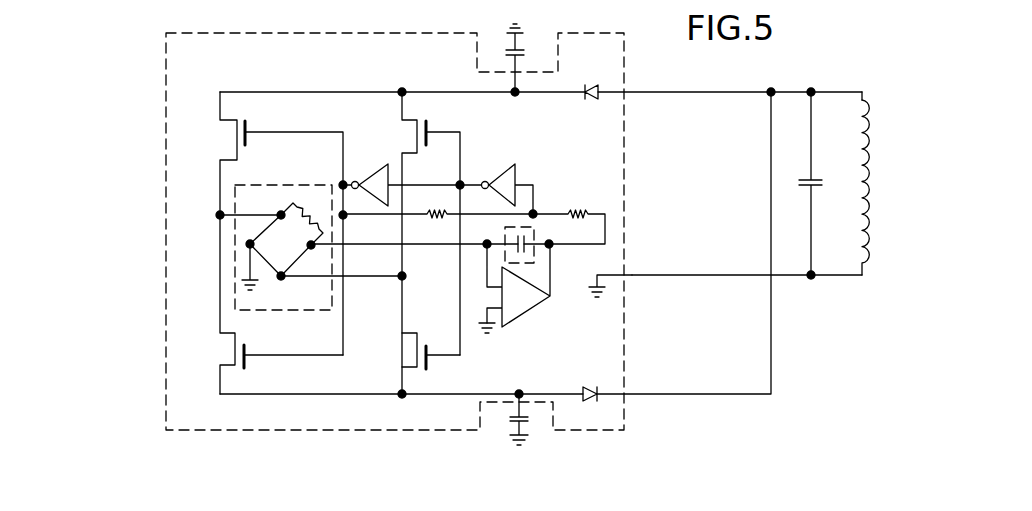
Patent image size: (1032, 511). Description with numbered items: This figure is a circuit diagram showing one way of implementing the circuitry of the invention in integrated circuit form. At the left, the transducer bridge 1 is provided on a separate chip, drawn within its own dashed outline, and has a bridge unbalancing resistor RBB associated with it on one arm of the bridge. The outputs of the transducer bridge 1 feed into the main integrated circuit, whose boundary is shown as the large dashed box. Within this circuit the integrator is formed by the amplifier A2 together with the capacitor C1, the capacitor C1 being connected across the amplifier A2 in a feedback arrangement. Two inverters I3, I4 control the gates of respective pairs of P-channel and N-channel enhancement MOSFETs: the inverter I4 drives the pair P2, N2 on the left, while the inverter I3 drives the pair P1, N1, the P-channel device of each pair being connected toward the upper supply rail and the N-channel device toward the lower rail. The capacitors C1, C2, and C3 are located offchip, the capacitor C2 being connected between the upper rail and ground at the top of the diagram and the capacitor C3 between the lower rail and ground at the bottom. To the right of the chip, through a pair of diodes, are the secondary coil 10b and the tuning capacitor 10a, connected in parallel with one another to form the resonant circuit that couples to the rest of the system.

The transducer bridge 1 is at (196, 236).
The tuning capacitor 10a is at (815, 178).
The secondary coil 10b is at (868, 180).
The P-channel enhancement MOSFET P1 is at (424, 243).
The P-channel enhancement MOSFET P2 is at (271, 223).
The N-channel enhancement MOSFET N1 is at (422, 351).
The N-channel enhancement MOSFET N2 is at (271, 304).
The inverter I3 is at (513, 175).
The inverter I4 is at (380, 175).
The capacitor C1 is at (530, 238).
The capacitor C2 is at (526, 58).
The capacitor C3 is at (530, 419).
The amplifier A2 is at (514, 288).
The bridge unbalancing resistor RBB is at (300, 184).